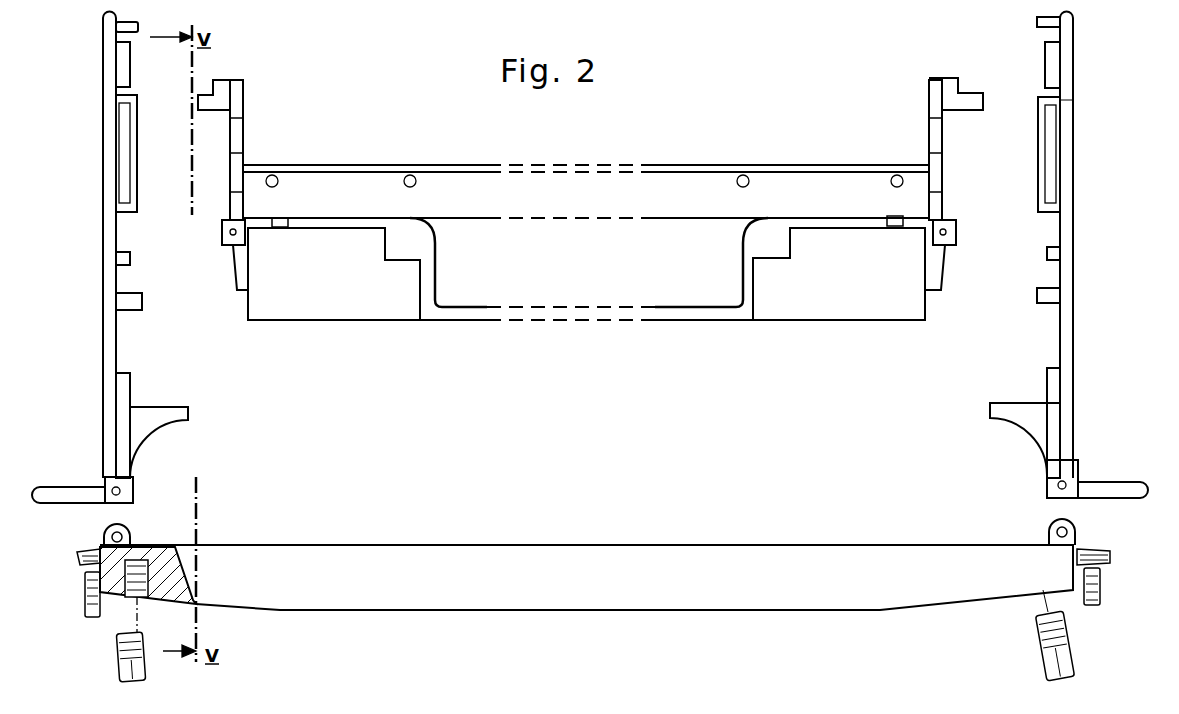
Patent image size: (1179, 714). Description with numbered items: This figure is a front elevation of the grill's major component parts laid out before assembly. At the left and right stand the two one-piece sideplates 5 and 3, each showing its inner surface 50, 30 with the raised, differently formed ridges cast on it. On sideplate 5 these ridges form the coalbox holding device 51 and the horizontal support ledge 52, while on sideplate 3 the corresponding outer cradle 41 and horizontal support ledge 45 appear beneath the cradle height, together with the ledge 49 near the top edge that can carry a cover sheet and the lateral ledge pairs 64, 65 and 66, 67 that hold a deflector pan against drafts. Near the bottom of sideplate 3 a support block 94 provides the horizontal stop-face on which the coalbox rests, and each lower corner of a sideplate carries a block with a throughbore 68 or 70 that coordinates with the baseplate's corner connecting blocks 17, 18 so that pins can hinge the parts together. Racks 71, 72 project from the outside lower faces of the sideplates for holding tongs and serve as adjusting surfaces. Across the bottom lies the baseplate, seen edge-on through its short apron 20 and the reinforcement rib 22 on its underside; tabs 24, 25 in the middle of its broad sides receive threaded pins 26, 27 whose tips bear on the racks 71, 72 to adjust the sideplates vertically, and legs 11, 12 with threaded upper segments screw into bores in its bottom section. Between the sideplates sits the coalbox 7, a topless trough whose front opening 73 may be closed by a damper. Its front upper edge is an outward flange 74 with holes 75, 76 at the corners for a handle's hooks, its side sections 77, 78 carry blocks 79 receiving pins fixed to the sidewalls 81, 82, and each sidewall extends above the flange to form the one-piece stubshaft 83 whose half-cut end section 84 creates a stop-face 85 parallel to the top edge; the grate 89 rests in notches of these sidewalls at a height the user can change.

The sideplate 3 is at (1074, 14).
The sideplate 5 is at (102, 18).
The coalbox 7 is at (378, 330).
The leg 11 is at (118, 661).
The leg 12 is at (1050, 662).
The connecting block 17 is at (1076, 532).
The connecting block 18 is at (131, 532).
The apron 20 is at (440, 549).
The reinforcement rib 22 is at (180, 600).
The tab 24 is at (1108, 558).
The tab 25 is at (85, 556).
The threaded pin 26 is at (1101, 599).
The threaded pin 27 is at (84, 593).
The inner surface 30 is at (1068, 102).
The second cradle 41 is at (1045, 190).
The horizontal support ledge 45 is at (1046, 301).
The ledge 49 is at (1042, 26).
The inner surface 50 is at (118, 283).
The holding device 51 is at (138, 86).
The horizontal support ledge 52 is at (142, 303).
The ledge 64 is at (1056, 433).
The ledge 65 is at (1050, 387).
The ledge 66 is at (1056, 160).
The ledge 67 is at (1050, 72).
The throughbore 68 is at (1064, 478).
The throughbore 70 is at (108, 480).
The rack 71 is at (62, 494).
The rack 72 is at (1125, 488).
The front opening 73 is at (590, 305).
The flange 74 is at (342, 222).
The hole 75 is at (290, 222).
The hole 76 is at (892, 222).
The side section 77 is at (248, 314).
The side section 78 is at (927, 312).
The block 79 is at (226, 248).
The sidewall 81 is at (236, 203).
The sidewall 82 is at (940, 208).
The stubshaft 83 is at (222, 82).
The end section 84 is at (194, 115).
The stop-face 85 is at (204, 96).
The grate 89 is at (850, 165).
The support block 94 is at (1007, 415).